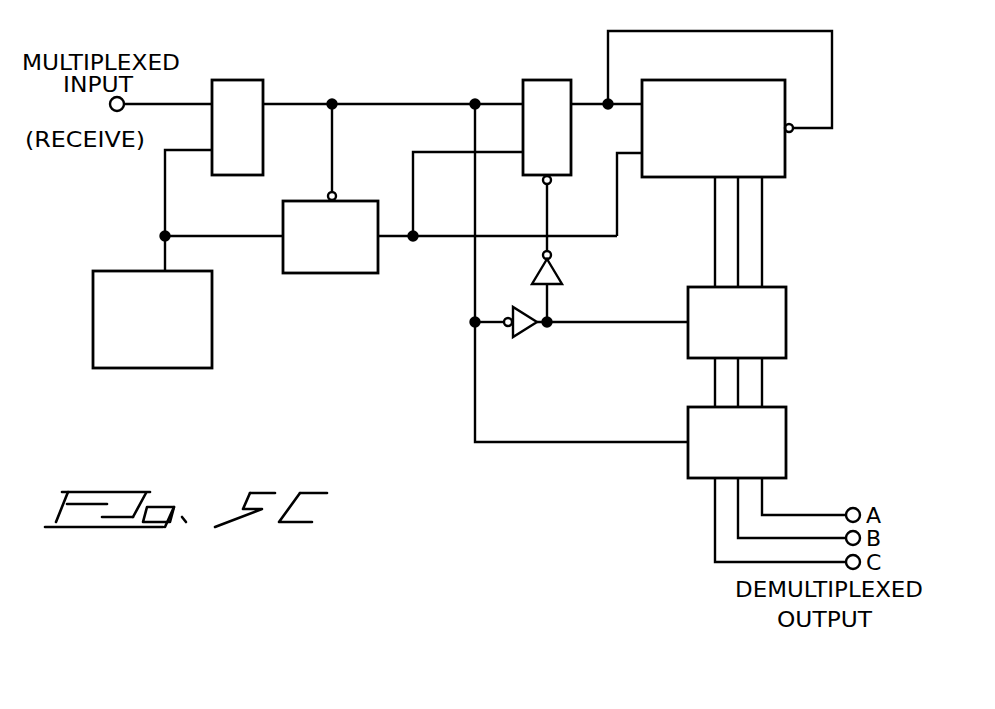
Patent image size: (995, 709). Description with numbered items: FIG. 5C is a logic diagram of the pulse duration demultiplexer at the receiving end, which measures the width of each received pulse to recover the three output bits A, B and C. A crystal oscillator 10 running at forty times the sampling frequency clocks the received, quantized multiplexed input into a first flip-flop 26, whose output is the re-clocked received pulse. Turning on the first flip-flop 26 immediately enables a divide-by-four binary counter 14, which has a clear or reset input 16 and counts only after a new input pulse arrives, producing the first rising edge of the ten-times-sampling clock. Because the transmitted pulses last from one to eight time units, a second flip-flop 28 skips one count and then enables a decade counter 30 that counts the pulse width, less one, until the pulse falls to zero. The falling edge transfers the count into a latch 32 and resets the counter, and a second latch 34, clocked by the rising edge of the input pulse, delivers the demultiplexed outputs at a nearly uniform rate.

The crystal oscillator 10 is at (152, 337).
The divide-by-four binary counter 14 is at (330, 251).
The clear or reset input 16 is at (347, 187).
The first flip-flop 26 is at (237, 112).
The second flip-flop 28 is at (547, 112).
The decade counter 30 is at (717, 115).
The latch 32 is at (760, 322).
The second latch 34 is at (760, 442).